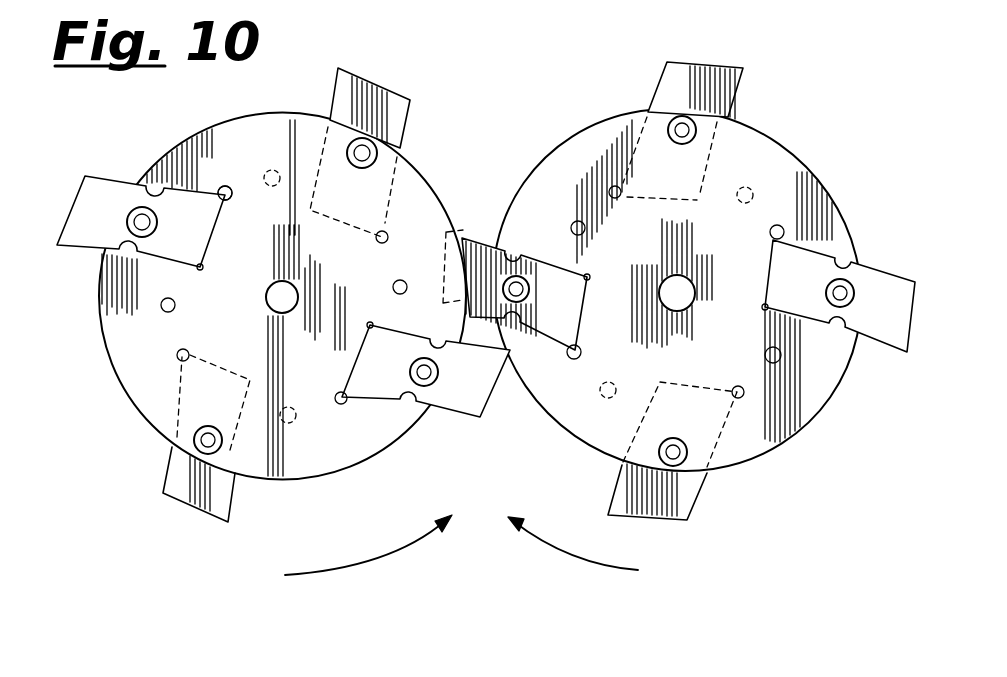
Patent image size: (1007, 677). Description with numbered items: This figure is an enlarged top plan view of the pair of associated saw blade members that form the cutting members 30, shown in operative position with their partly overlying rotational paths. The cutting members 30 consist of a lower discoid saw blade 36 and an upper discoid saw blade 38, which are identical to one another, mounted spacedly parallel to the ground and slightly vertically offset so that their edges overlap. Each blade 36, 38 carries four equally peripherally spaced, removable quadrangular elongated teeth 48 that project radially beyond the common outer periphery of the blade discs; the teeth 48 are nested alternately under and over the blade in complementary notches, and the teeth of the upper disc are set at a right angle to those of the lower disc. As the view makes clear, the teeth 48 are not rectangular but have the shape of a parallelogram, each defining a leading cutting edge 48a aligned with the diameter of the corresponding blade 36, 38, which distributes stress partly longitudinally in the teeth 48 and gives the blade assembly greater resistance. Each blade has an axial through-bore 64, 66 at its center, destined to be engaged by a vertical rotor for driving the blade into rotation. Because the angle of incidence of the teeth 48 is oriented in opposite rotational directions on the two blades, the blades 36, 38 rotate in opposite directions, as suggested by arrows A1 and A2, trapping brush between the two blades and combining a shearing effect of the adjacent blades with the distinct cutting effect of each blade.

The cutting members 30 is at (515, 290).
The lower discoid saw blade 36 is at (770, 168).
The upper discoid saw blade 38 is at (264, 137).
The quadrangular elongated teeth 48 is at (395, 100).
The leading cutting edge 48a is at (92, 252).
The axial through-bore 64 is at (685, 278).
The axial through-bore 66 is at (272, 305).
The rotational direction arrow A1 is at (573, 555).
The rotational direction arrow A2 is at (373, 562).